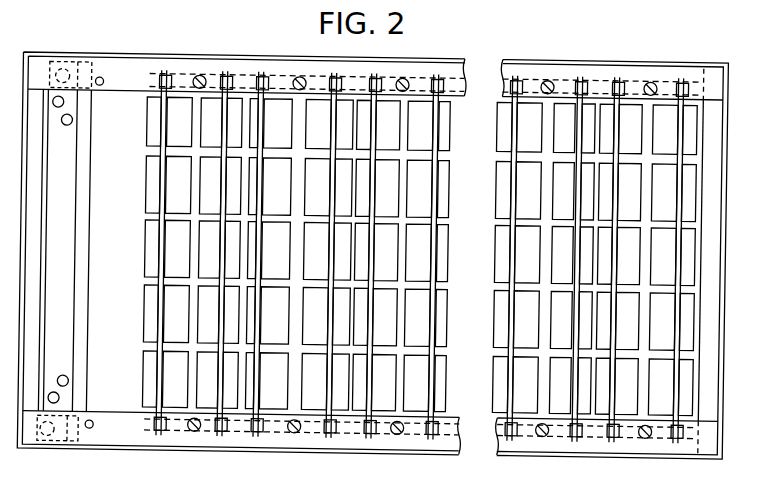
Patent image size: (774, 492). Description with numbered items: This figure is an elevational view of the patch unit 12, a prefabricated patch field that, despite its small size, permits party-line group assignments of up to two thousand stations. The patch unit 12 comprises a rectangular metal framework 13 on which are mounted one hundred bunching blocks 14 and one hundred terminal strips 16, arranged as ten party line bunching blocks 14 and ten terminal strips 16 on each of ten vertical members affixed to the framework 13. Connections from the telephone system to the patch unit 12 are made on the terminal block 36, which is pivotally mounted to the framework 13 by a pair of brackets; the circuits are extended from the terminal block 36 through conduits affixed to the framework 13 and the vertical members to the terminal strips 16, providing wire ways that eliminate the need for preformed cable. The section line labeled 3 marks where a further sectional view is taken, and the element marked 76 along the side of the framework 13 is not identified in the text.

The patch unit 12 is at (755, 275).
The framework 13 is at (202, 52).
The bunching block 14 is at (178, 135).
The terminal strip 16 is at (152, 115).
The terminal block 36 is at (90, 225).
The end bar 76 is at (63, 322).
The section line 3- 3 is at (247, 25).